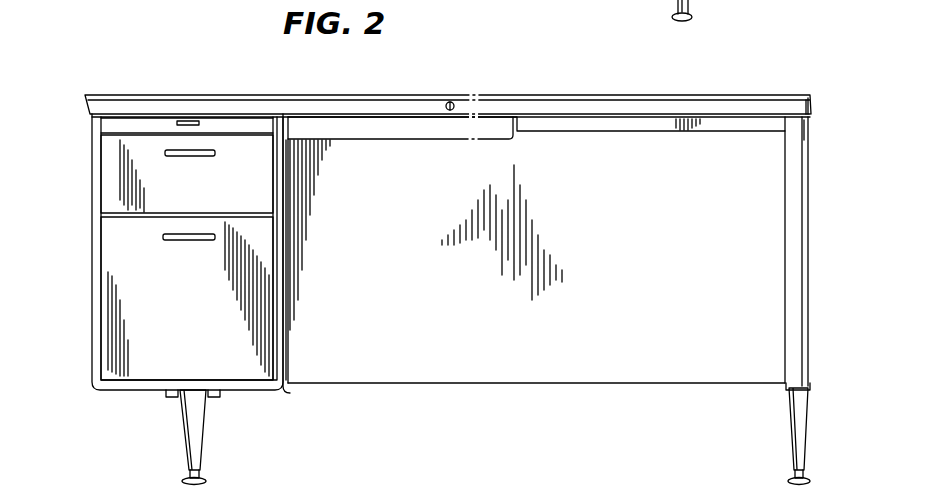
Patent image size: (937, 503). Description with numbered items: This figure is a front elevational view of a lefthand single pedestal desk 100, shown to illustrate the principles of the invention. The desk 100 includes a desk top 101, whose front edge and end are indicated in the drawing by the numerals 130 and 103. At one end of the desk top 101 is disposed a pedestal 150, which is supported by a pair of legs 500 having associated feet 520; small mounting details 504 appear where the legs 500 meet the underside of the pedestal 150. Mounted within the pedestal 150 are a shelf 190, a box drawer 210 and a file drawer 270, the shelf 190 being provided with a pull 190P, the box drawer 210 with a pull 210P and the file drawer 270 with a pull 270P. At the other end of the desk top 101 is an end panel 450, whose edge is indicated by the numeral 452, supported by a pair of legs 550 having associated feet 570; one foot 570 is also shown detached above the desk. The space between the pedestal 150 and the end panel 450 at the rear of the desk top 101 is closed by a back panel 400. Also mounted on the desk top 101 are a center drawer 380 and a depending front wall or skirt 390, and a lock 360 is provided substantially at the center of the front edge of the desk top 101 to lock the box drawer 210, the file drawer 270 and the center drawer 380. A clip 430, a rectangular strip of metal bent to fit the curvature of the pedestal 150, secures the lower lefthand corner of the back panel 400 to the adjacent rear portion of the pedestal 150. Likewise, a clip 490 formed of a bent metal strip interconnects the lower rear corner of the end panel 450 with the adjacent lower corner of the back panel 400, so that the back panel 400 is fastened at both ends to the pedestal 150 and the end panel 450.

The desk 100 is at (468, 76).
The desk top 101 is at (612, 96).
The top edge band 130 is at (742, 96).
The top end edge 103 is at (813, 104).
The shelf 190 is at (156, 228).
The pull 190P is at (190, 121).
The box drawer 210 is at (151, 178).
The pull 210P is at (170, 153).
The file drawer 270 is at (154, 298).
The pull 270P is at (170, 237).
The pedestal 150 is at (290, 300).
The center drawer 380 is at (400, 115).
The lock 360 is at (452, 101).
The front wall or skirt 390 is at (628, 133).
The back panel 400 is at (555, 372).
The clip 430 is at (289, 393).
The end panel 450 is at (797, 206).
The end panel edge 452 is at (804, 263).
The clip 490 is at (788, 386).
The legs 500 is at (186, 446).
The leg mounting bracket 504 is at (168, 395).
The feet 520 is at (202, 482).
The legs 550 is at (762, 434).
The feet 570 is at (790, 482).